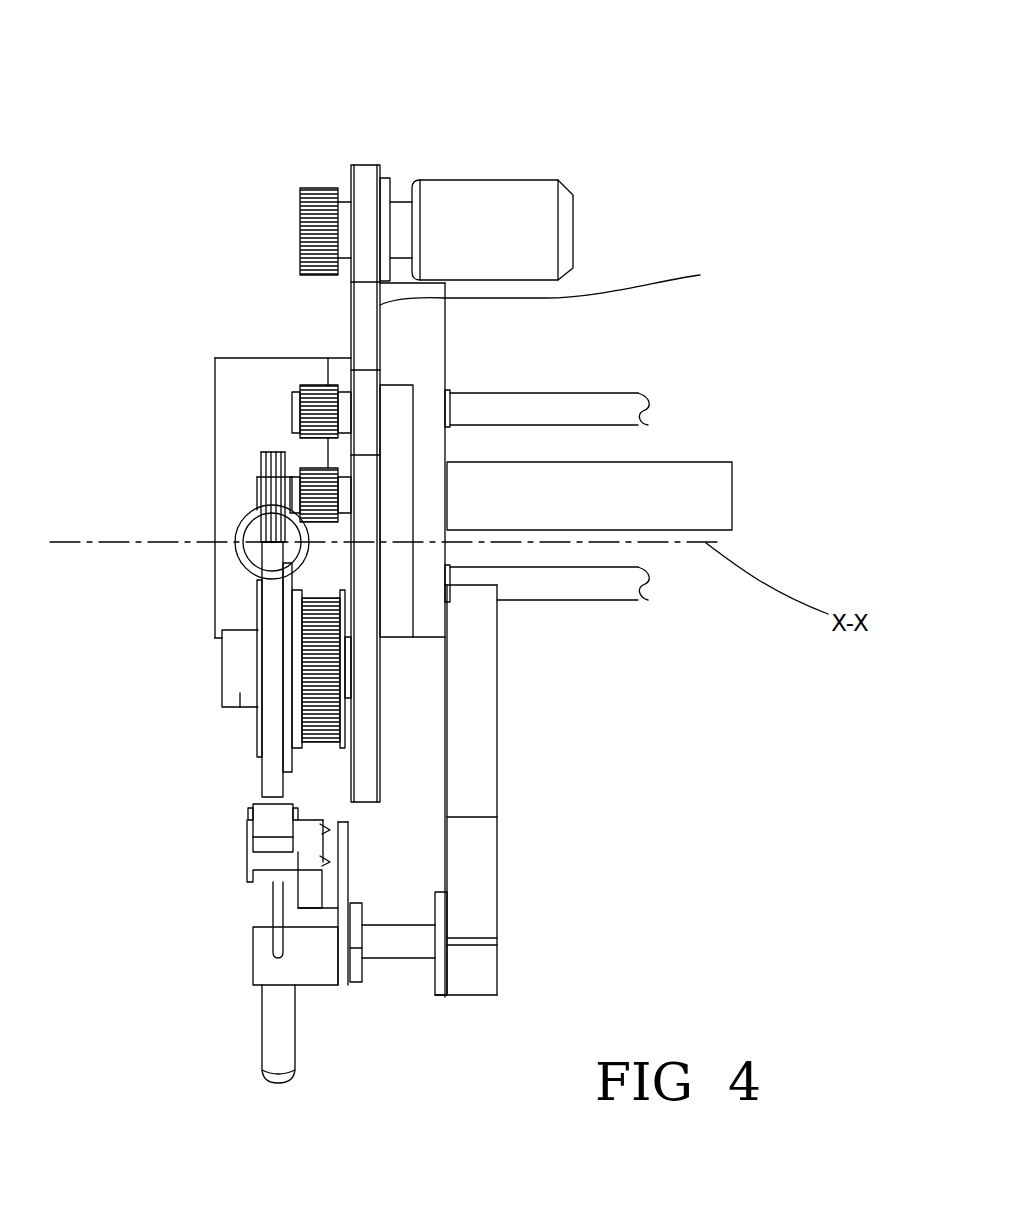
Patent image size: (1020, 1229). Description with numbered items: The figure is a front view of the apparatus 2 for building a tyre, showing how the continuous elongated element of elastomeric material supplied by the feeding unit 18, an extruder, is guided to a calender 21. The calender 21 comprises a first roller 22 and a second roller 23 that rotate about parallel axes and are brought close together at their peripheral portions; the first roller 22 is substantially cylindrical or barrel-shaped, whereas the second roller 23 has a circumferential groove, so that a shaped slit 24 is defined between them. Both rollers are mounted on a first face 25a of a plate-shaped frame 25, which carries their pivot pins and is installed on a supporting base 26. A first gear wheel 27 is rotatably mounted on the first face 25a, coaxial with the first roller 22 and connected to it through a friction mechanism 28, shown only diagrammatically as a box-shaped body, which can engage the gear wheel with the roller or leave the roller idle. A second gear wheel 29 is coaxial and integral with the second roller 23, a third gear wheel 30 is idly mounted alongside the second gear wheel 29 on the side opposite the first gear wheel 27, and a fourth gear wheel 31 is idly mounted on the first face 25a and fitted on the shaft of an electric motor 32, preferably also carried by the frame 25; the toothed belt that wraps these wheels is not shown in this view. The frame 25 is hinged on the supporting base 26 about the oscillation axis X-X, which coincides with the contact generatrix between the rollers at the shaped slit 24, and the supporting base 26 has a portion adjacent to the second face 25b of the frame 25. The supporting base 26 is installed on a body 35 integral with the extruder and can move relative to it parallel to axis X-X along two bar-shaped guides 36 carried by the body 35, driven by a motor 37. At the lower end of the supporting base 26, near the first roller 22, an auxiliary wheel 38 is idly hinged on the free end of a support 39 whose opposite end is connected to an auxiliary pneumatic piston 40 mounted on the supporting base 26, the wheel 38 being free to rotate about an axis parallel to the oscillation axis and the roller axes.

The apparatus 2 is at (668, 174).
The feeding unit 18 is at (236, 552).
The calender 21 is at (235, 462).
The first roller 22 is at (268, 770).
The second roller 23 is at (258, 452).
The shaped slit 24 is at (268, 567).
The frame 25 is at (368, 166).
The first face 25a is at (350, 282).
The second face 25b is at (562, 282).
The supporting base 26 is at (444, 355).
The first gear wheel 27 is at (320, 730).
The friction mechanism 28 is at (240, 695).
The second gear wheel 29 is at (328, 468).
The third gear wheel 30 is at (318, 385).
The fourth gear wheel 31 is at (318, 187).
The electric motor 32 is at (534, 195).
The body 35 is at (206, 506).
The guides 36 is at (626, 406).
The motor 37 is at (690, 480).
The auxiliary wheel 38 is at (270, 818).
The support 39 is at (253, 862).
The auxiliary pneumatic piston 40 is at (275, 1020).